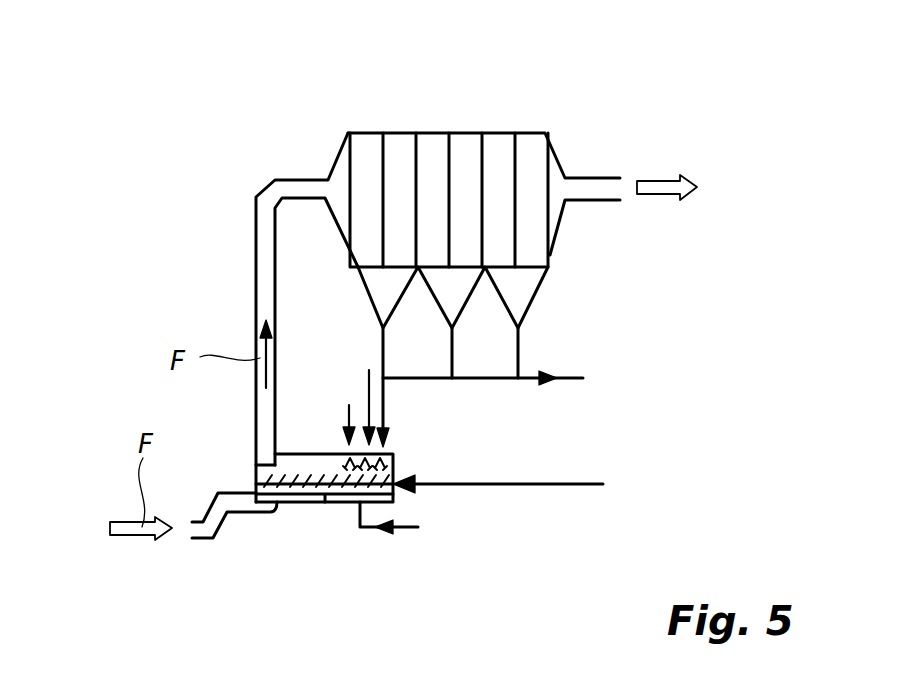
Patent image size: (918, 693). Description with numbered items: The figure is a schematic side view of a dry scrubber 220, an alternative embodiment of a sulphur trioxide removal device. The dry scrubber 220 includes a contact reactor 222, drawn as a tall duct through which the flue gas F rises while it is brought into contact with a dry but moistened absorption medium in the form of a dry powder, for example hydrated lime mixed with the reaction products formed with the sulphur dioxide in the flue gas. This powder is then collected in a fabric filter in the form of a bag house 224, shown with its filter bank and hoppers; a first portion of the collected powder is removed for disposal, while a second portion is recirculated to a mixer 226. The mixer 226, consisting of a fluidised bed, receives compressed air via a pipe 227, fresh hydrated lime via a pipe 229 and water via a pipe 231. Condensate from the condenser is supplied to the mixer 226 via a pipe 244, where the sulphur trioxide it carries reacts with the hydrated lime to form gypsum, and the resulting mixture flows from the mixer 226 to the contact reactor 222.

The dry scrubber 220 is at (155, 151).
The contact reactor 222 is at (258, 298).
The bag house 224 is at (493, 130).
The mixer 226 is at (310, 502).
The pipe 227 is at (407, 527).
The pipe 229 is at (367, 382).
The pipe 231 is at (347, 405).
The pipe 244 is at (533, 484).